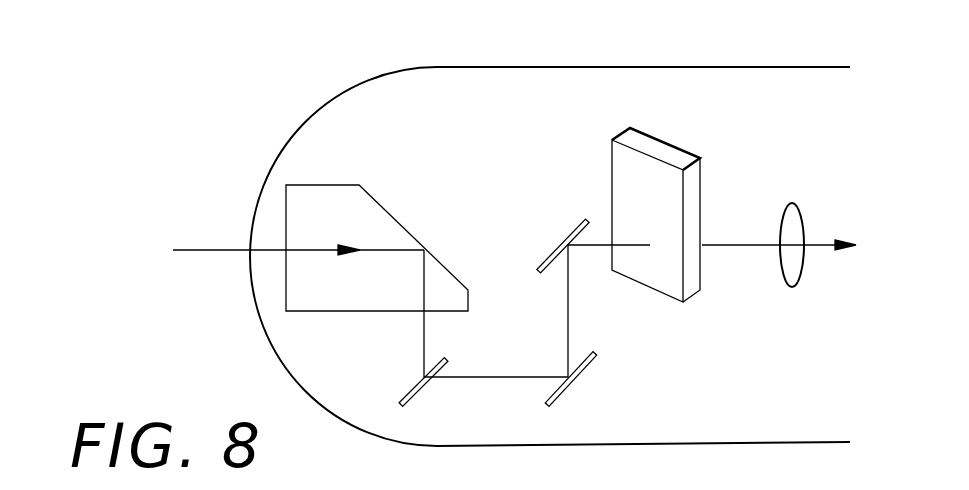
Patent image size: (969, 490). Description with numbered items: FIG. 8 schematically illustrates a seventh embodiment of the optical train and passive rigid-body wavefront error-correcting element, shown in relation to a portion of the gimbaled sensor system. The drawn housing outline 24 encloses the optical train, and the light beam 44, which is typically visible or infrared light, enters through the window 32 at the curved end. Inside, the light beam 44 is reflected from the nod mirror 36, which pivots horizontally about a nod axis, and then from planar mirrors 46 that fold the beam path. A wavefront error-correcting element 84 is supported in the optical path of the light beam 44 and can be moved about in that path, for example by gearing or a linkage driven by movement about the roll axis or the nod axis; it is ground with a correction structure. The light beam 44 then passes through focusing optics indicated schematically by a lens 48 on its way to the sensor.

The housing 24 is at (566, 67).
The window 32 is at (269, 173).
The light beam 44 is at (190, 250).
The nod mirror 36 is at (337, 312).
The planar mirrors 46 is at (430, 396).
The wavefront error-correcting element 84 is at (693, 177).
The lens 48 is at (800, 275).